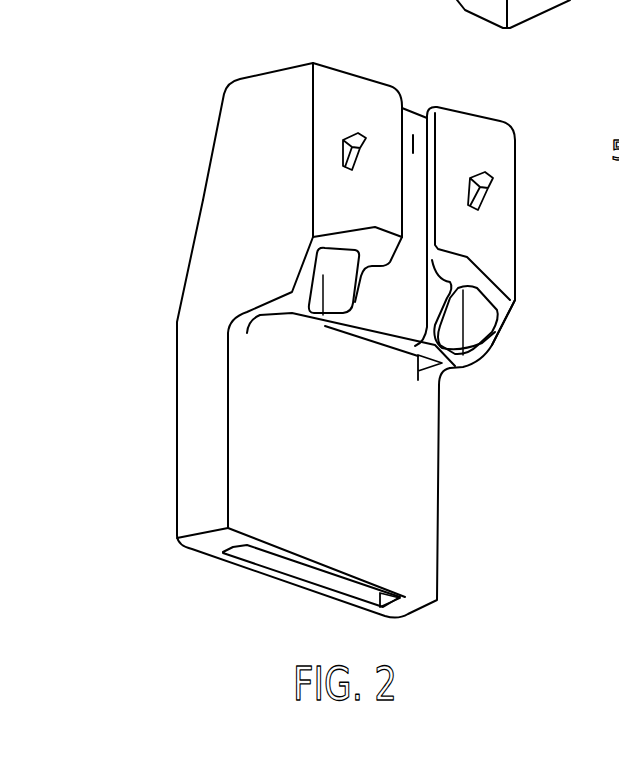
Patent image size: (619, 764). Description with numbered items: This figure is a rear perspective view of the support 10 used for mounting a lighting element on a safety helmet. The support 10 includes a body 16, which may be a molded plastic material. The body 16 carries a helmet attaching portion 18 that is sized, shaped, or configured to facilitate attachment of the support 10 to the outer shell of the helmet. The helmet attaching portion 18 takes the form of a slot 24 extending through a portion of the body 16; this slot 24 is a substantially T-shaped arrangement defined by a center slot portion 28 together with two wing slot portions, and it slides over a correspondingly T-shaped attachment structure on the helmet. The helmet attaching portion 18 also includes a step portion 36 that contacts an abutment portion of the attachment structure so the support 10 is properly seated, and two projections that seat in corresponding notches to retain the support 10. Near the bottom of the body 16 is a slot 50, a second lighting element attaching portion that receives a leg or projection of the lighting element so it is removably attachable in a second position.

The support 10 is at (165, 86).
The body 16 is at (204, 375).
The helmet attaching portion 18 is at (498, 242).
The slot 24 is at (460, 160).
The center slot portion 28 is at (413, 140).
The step portion 36 is at (462, 370).
The slot 50 is at (252, 556).